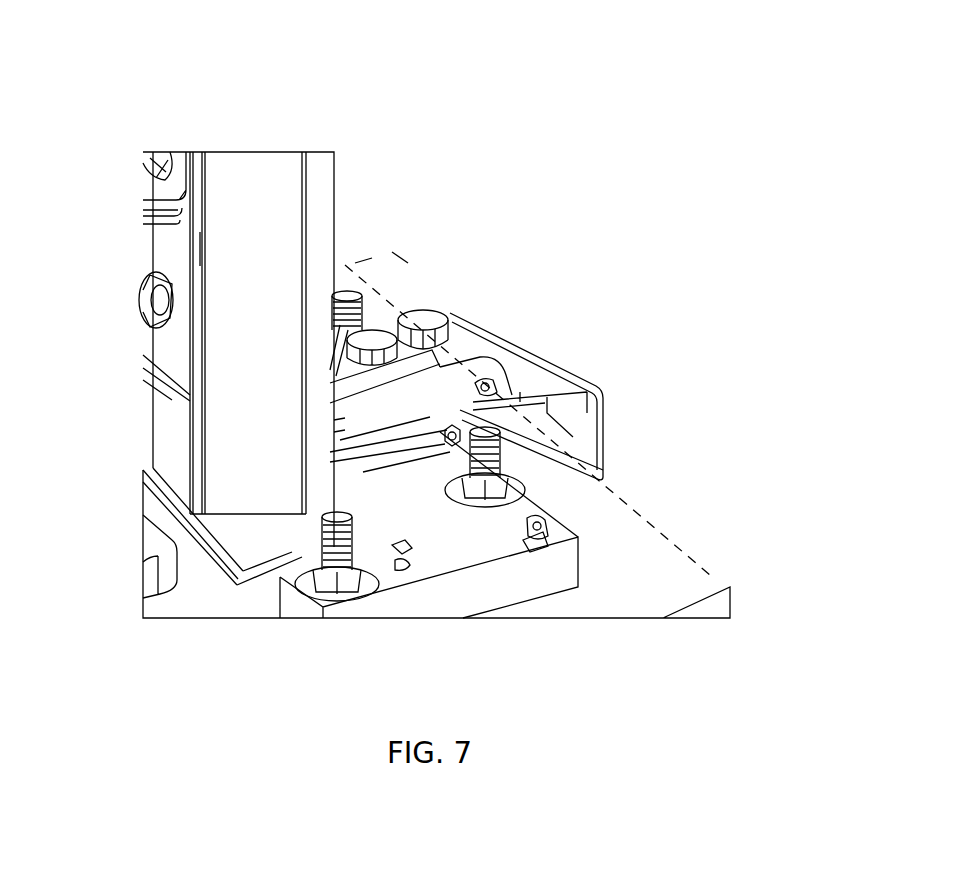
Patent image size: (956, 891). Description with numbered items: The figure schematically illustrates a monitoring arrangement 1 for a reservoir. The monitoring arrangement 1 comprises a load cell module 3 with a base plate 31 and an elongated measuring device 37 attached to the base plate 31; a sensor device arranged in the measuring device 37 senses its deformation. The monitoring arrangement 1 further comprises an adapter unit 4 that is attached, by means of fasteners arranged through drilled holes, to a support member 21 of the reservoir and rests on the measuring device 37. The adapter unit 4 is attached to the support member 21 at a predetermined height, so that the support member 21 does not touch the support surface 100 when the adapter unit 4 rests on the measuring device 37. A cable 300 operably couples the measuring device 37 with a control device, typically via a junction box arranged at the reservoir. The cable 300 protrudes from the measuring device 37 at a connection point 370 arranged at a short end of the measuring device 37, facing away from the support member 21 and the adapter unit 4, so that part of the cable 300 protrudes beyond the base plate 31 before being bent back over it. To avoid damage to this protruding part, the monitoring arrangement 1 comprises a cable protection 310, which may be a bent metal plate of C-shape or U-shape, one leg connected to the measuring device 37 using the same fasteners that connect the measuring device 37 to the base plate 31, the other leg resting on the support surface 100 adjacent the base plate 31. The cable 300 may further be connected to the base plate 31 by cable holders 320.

The monitoring arrangement 1 is at (622, 117).
The load cell module 3 is at (687, 459).
The adapter unit 4 is at (356, 203).
The support member 21 is at (213, 461).
The base plate 31 is at (553, 573).
The measuring device 37 is at (345, 418).
The support surface 100 is at (710, 563).
The cable 300 is at (527, 437).
The cable protection 310 is at (567, 358).
The cable holder 320 is at (457, 447).
The connection point 370 is at (490, 384).